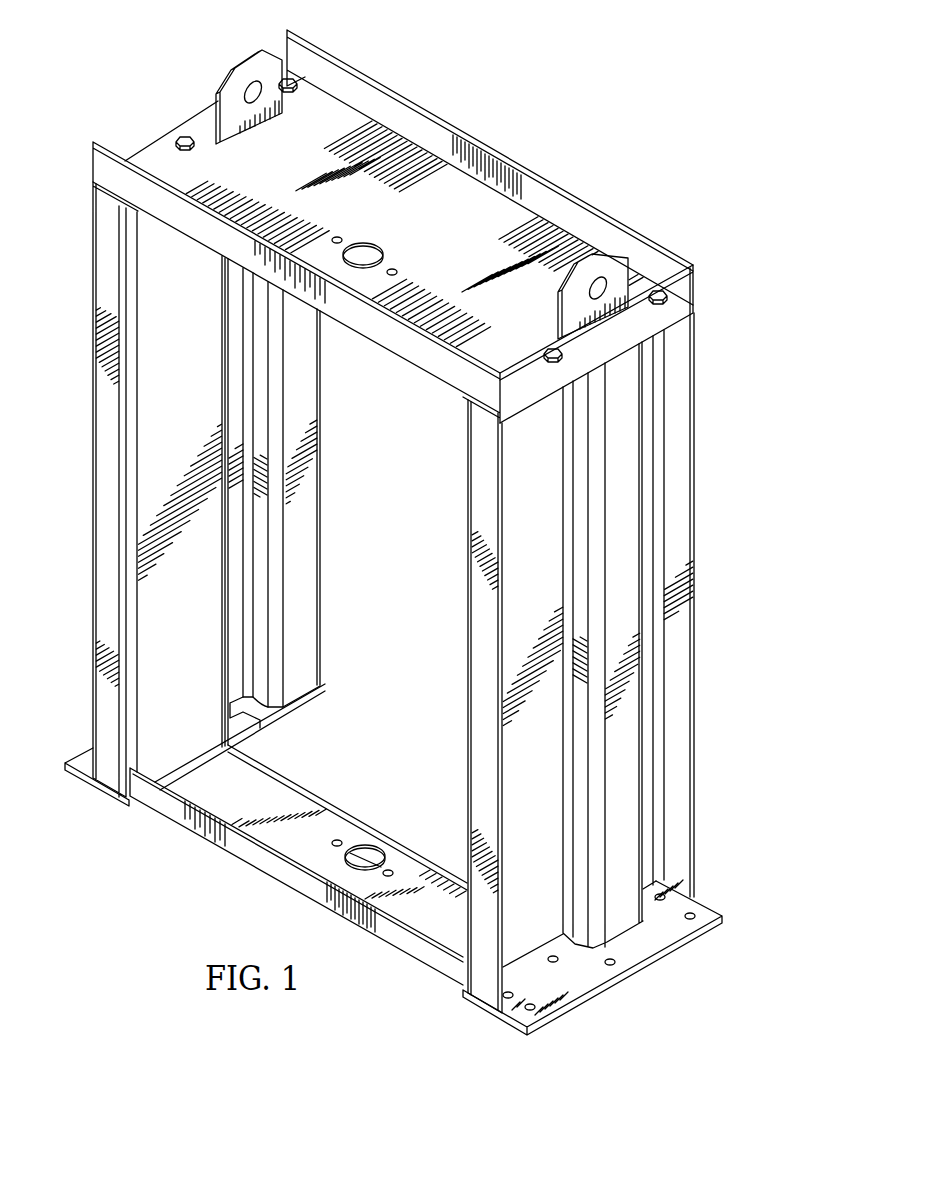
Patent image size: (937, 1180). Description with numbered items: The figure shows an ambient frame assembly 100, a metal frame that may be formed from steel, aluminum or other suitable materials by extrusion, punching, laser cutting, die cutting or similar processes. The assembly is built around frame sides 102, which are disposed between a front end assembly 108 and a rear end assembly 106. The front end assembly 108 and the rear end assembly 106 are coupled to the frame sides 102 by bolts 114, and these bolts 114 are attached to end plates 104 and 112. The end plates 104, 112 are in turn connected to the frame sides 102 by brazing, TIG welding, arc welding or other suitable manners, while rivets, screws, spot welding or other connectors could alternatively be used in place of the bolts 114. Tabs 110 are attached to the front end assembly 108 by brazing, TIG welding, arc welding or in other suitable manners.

The ambient frame assembly 100 is at (110, 60).
The frame sides 102 is at (630, 790).
The end plate 104 is at (590, 978).
The rear end assembly 106 is at (245, 855).
The front end assembly 108 is at (150, 153).
The tabs 110 is at (247, 55).
The end plate 112 is at (463, 400).
The bolts 114 is at (182, 130).